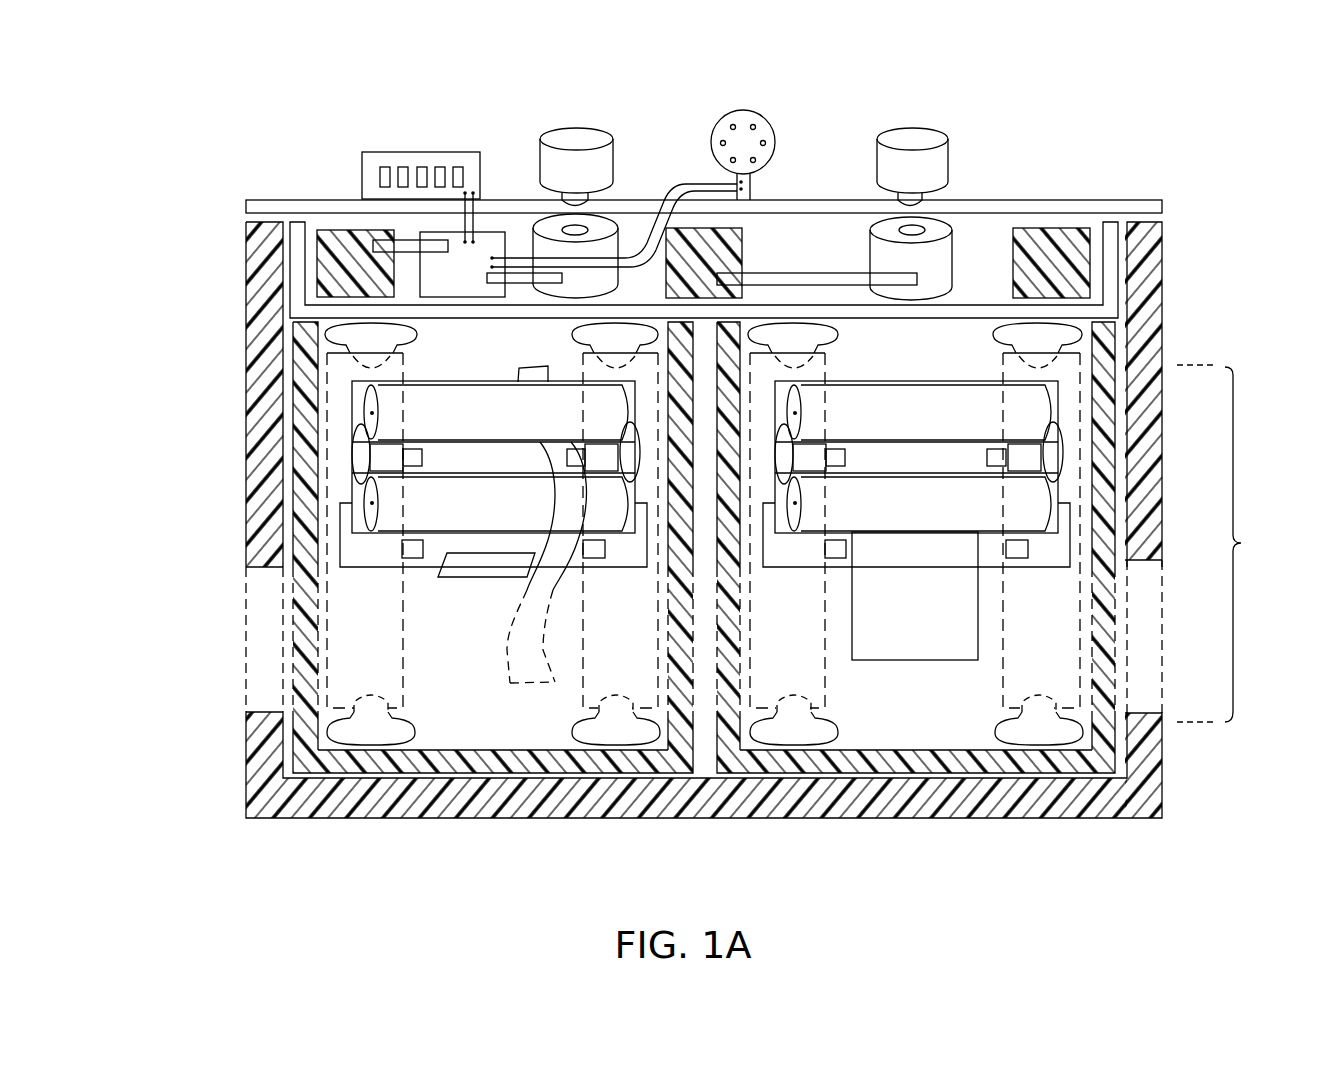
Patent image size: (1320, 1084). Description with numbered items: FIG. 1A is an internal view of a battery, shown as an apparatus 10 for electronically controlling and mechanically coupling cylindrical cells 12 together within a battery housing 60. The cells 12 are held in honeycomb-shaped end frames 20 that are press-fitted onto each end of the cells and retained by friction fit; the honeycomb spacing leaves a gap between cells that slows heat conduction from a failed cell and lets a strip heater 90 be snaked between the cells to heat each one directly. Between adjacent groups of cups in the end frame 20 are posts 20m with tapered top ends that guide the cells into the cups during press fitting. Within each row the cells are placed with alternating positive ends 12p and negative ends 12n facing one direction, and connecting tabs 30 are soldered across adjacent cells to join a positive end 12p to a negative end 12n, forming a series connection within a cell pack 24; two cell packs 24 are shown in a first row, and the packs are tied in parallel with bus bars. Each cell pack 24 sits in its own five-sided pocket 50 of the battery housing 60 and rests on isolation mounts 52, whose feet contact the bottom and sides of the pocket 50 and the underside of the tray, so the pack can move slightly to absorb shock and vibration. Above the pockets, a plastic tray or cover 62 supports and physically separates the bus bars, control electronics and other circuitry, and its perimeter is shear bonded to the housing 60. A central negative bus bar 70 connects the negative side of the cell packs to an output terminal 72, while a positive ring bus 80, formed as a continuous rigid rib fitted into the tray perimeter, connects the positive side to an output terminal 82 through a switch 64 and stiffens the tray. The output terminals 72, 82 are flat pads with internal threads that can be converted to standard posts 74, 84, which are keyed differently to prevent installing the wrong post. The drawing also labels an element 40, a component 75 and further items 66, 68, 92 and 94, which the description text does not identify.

The apparatus 10 is at (188, 772).
The cells 12 is at (412, 508).
The positive end 12p is at (370, 398).
The negative end 12n is at (370, 507).
The end frame 20 is at (395, 677).
The posts 20m is at (988, 457).
The cell pack 24 is at (1226, 543).
The connecting tabs 30 is at (362, 466).
The mounting plate 40 is at (458, 574).
The five-sided pocket 50 is at (397, 762).
The isolation mounts 52 is at (640, 737).
The battery housing 60 is at (1160, 305).
The plastic tray 62 is at (1110, 240).
The switch 64 is at (467, 182).
The power supply 66 is at (467, 182).
The memory 68 is at (487, 242).
The central negative bus bar 70 is at (733, 240).
The output terminal 72 is at (890, 253).
The standard post 74 is at (928, 128).
The reservoir 75 is at (926, 614).
The ring bus 80 is at (348, 240).
The output terminal 82 is at (600, 228).
The standard post 84 is at (577, 128).
The strip heater 90 is at (520, 657).
The control panel 92 is at (428, 158).
The connector port 94 is at (750, 118).